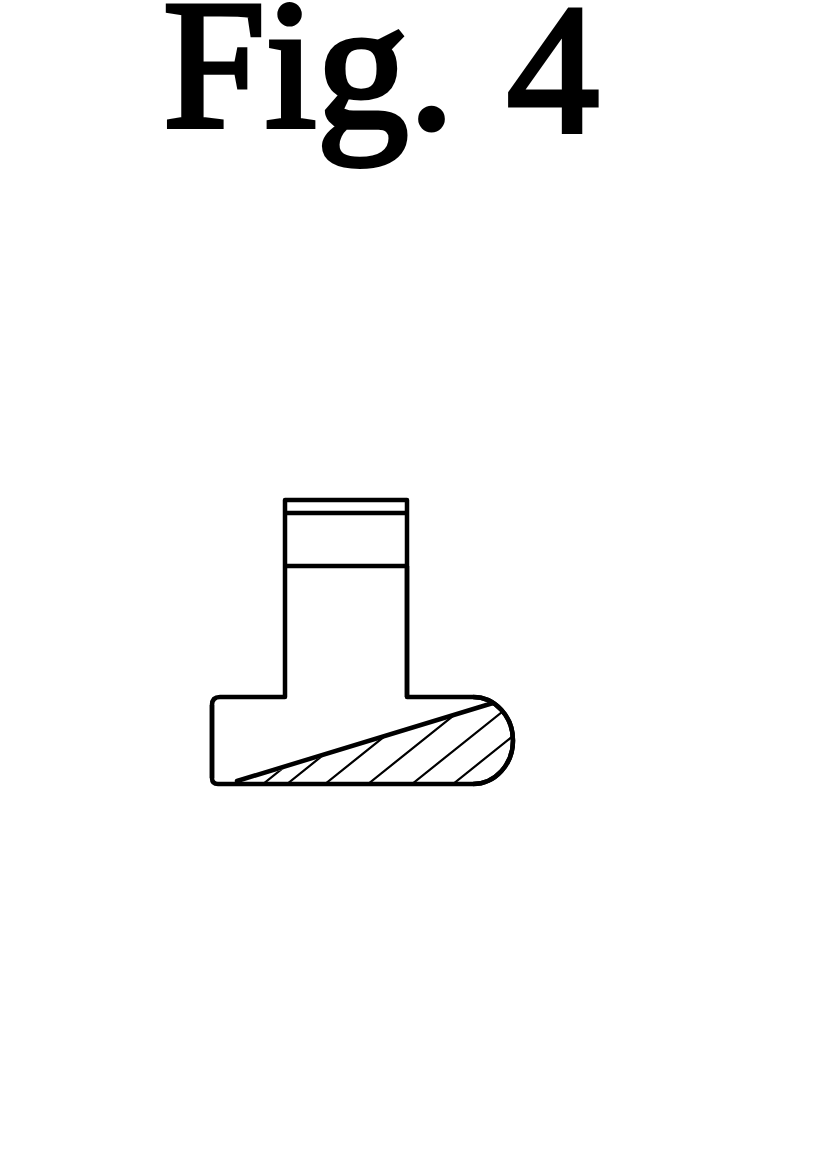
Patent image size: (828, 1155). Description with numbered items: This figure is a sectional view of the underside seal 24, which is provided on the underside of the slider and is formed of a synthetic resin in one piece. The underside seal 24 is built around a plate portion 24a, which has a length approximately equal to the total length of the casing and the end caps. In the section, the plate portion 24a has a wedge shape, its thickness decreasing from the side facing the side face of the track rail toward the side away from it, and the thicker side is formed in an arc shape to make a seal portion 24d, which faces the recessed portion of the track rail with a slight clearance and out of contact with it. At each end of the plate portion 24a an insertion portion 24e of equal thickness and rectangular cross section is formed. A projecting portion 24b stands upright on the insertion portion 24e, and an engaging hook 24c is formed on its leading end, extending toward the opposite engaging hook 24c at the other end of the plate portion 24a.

The underside seal 24 is at (255, 622).
The plate portion 24a is at (435, 767).
The projecting portion 24b is at (393, 645).
The engaging hook 24c is at (393, 547).
The seal portion 24d is at (513, 737).
The insertion portion 24e is at (238, 744).